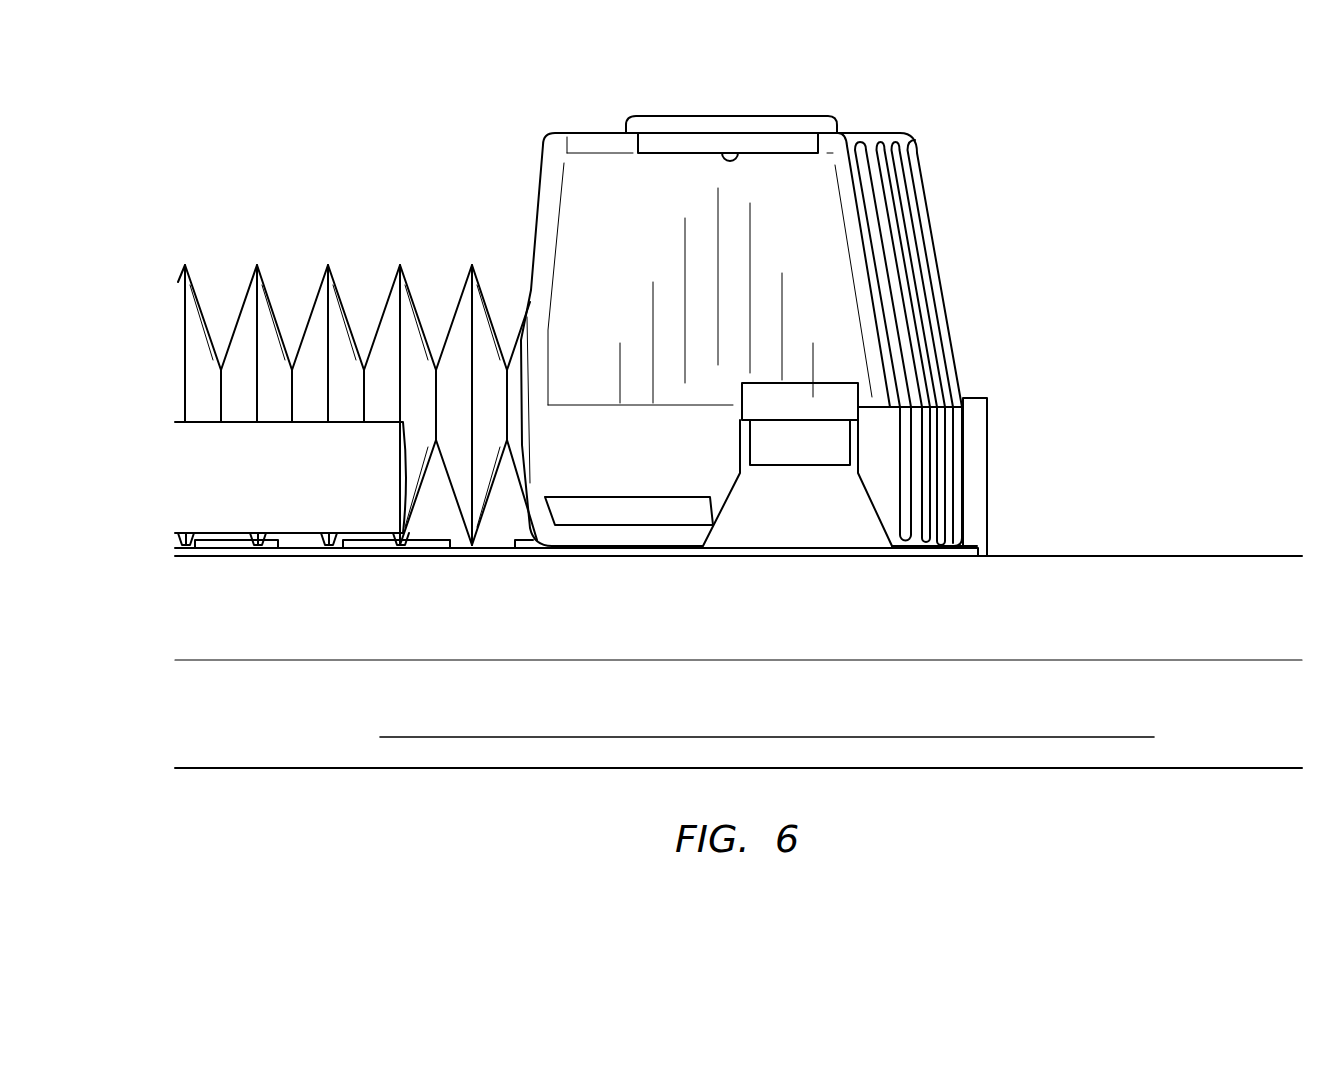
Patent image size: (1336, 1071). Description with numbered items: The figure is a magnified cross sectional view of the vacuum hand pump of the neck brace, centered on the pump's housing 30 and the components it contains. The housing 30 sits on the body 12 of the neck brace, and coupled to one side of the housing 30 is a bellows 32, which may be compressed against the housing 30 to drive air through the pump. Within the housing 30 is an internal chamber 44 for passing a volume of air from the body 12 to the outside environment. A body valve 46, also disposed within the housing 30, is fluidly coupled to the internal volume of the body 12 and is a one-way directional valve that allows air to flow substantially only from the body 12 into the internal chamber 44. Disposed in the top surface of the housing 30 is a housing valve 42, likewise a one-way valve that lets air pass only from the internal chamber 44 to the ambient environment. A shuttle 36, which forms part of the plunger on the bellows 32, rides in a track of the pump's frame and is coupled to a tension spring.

The body 12 is at (1070, 597).
The housing 30 is at (918, 185).
The bellows 32 is at (327, 265).
The shuttle 36 is at (305, 467).
The housing valve 42 is at (820, 117).
The internal chamber 44 is at (605, 248).
The body valve 46 is at (818, 430).